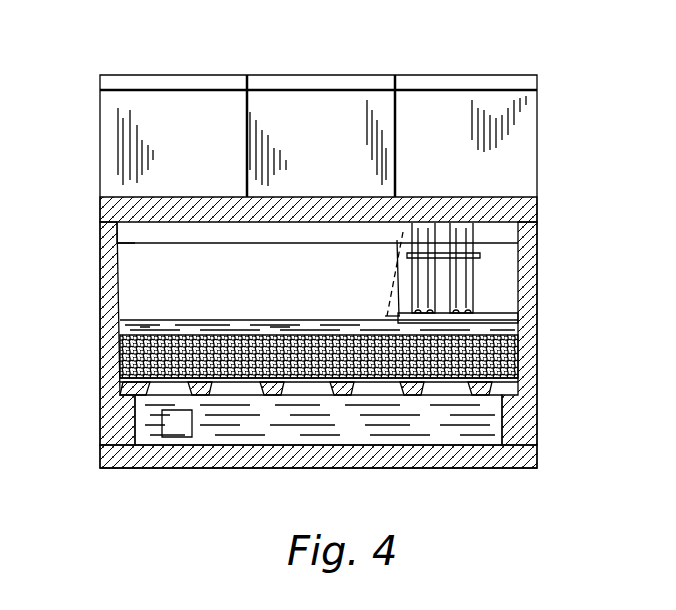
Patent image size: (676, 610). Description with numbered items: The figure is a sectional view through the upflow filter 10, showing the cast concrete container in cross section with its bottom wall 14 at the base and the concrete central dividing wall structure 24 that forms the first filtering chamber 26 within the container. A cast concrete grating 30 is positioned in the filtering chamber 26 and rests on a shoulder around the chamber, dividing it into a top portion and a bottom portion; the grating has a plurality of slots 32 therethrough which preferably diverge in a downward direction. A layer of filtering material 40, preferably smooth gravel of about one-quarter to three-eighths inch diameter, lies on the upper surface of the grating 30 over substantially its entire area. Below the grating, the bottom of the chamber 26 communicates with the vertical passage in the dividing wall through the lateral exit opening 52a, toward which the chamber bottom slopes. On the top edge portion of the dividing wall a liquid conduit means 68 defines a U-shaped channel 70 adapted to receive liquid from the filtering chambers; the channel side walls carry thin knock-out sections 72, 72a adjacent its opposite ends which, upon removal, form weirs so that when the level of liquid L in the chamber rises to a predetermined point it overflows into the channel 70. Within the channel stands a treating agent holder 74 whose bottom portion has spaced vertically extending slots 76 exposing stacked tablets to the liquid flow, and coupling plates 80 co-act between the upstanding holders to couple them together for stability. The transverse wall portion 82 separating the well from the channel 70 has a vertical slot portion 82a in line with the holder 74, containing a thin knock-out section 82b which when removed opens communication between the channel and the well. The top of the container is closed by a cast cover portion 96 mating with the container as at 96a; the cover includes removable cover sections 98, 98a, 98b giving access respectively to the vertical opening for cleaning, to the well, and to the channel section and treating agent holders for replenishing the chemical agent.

The upflow filter 10 is at (548, 229).
The bottom wall 14 is at (300, 468).
The central dividing wall structure 24 is at (160, 240).
The first filtering chamber 26 is at (120, 345).
The cast concrete grating 30 is at (512, 389).
The openings or slots 32 is at (248, 385).
The layer of filtering material 40 is at (520, 352).
The second lateral exit opening 52a is at (176, 432).
The liquid conduit means 68 is at (478, 308).
The channel or trough 70 is at (448, 378).
The knock-out section 72 is at (380, 352).
The knock-out section 72a is at (519, 318).
The treating agent holder 74 is at (457, 235).
The vertically extending slots 76 is at (432, 300).
The coupling plates 80 is at (482, 222).
The transverse wall portion 82 is at (430, 245).
The vertical slot portion 82a is at (407, 196).
The knock-out section 82b is at (398, 320).
The cast cover portion 96 is at (100, 207).
The mating location 96a is at (105, 237).
The removable cover section 98 is at (155, 75).
The removable cover section 98a is at (335, 78).
The removable cover section 98b is at (480, 78).
The level of liquid L is at (147, 320).